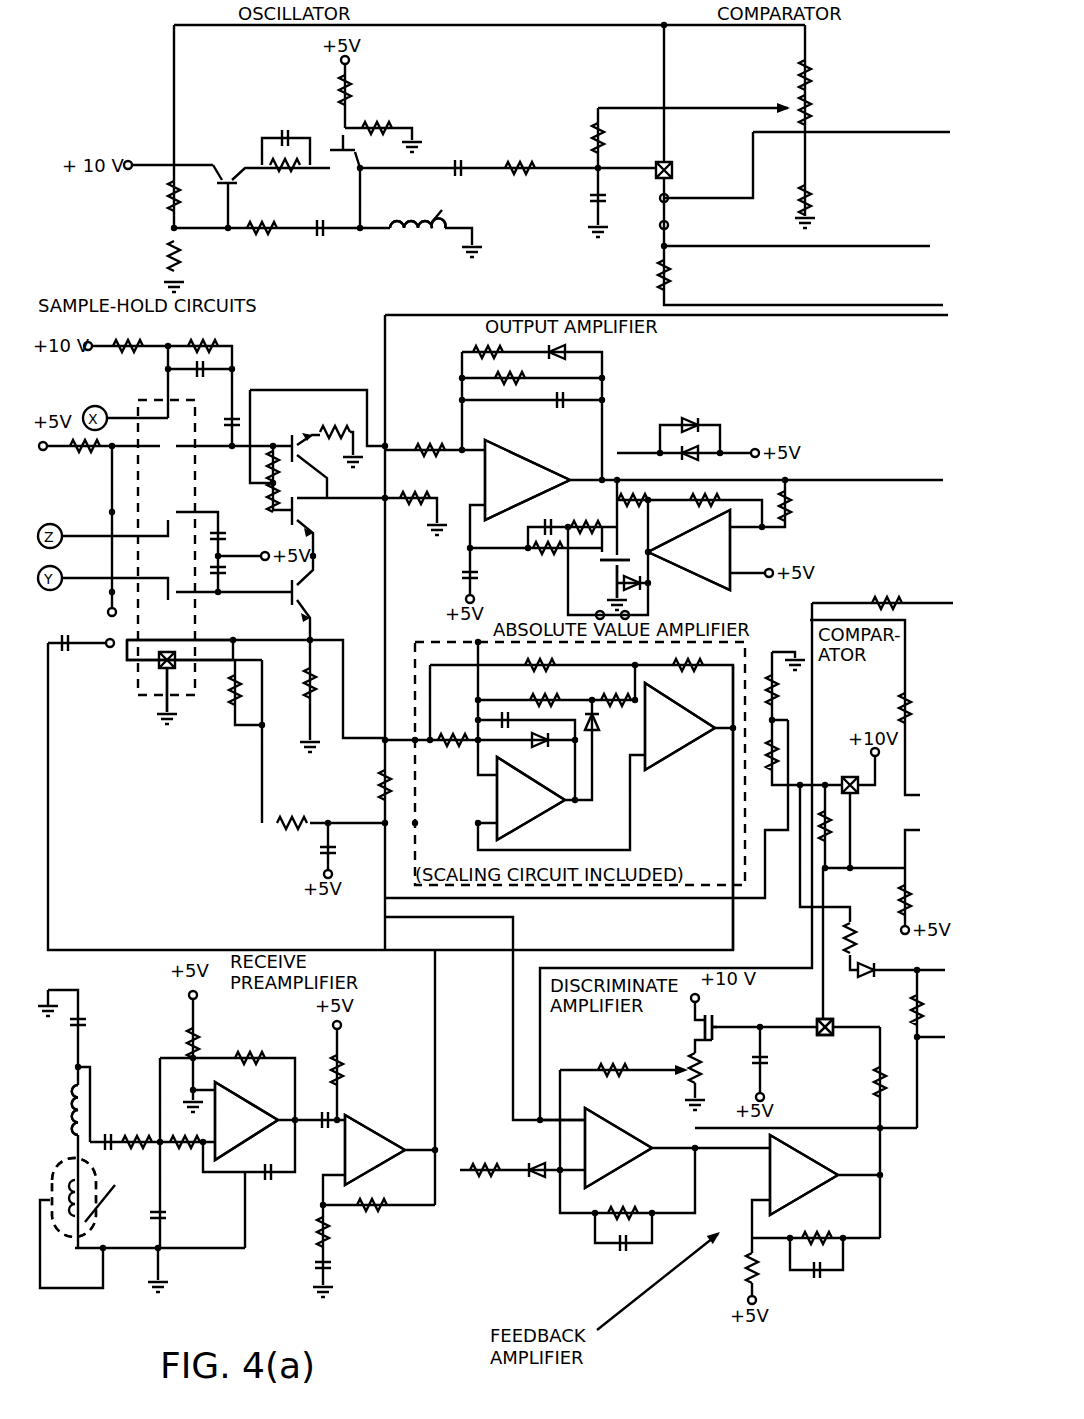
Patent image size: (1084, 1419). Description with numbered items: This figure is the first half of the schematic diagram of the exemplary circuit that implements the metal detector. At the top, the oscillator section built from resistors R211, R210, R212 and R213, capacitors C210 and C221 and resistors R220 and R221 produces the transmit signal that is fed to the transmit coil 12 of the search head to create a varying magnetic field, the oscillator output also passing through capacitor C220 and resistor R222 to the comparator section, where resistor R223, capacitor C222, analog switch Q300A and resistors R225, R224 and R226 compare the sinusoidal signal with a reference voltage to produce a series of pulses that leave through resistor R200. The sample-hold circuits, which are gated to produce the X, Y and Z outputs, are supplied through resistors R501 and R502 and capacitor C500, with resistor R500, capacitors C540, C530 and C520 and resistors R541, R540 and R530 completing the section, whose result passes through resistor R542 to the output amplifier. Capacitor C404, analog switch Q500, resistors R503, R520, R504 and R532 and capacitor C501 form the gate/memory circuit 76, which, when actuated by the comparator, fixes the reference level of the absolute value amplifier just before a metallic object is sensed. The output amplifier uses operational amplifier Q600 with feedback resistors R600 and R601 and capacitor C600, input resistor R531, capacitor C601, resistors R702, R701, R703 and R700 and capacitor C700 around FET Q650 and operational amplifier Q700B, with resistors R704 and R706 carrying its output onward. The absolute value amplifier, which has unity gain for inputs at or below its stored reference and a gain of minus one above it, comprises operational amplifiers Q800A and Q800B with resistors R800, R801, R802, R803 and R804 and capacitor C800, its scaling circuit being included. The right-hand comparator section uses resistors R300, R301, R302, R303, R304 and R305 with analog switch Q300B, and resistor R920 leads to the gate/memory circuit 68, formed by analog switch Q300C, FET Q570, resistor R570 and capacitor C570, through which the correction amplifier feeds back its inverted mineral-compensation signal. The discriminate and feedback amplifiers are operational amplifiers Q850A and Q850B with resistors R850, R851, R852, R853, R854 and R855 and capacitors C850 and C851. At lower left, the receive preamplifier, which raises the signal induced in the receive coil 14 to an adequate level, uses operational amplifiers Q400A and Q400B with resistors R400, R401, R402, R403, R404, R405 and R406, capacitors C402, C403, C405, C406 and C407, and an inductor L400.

The resistor R211 is at (150, 196).
The resistor R210 is at (148, 256).
The resistor R212 is at (291, 177).
The capacitor C210 is at (279, 123).
The resistor R213 is at (265, 241).
The capacitor C221 is at (323, 243).
The resistor R220 is at (370, 88).
The resistor R221 is at (381, 117).
The capacitor C220 is at (457, 157).
The resistor R222 is at (520, 156).
The transmit coil 12 is at (429, 212).
The resistor R223 is at (572, 133).
The capacitor C222 is at (570, 198).
The analog switch Q300A is at (697, 171).
The resistor R225 is at (833, 75).
The resistor R224 is at (833, 110).
The resistor R226 is at (833, 200).
The resistor R200 is at (688, 275).
The resistor R501 is at (127, 334).
The resistor R502 is at (203, 334).
The capacitor C500 is at (205, 383).
The resistor R500 is at (79, 458).
The capacitor C540 is at (261, 421).
The resistor R541 is at (339, 420).
The resistor R540 is at (240, 466).
The resistor R530 is at (247, 497).
The capacitor C530 is at (244, 535).
The capacitor C520 is at (244, 567).
The capacitor C404 is at (63, 631).
The analog switch Q500 is at (147, 705).
The resistor R503 is at (211, 697).
The resistor R520 is at (290, 668).
The gate/memory circuit 76 is at (170, 724).
The resistor R504 is at (290, 810).
The resistor R532 is at (360, 785).
The capacitor C501 is at (301, 851).
The resistor R542 is at (428, 438).
The resistor R600 is at (461, 344).
The resistor R601 is at (523, 369).
The capacitor C600 is at (568, 412).
The operational amplifier Q600 is at (527, 480).
The resistor R531 is at (423, 487).
The resistor R702 is at (613, 494).
The capacitor C700 is at (550, 520).
The resistor R701 is at (591, 519).
The resistor R703 is at (691, 513).
The resistor R700 is at (539, 562).
The capacitor C601 is at (448, 575).
The FET Q650 is at (599, 568).
The operational amplifier Q700B is at (721, 550).
The resistor R704 is at (813, 506).
The resistor R706 is at (883, 592).
The resistor R801 is at (570, 655).
The resistor R802 is at (549, 689).
The resistor R803 is at (607, 689).
The resistor R804 is at (691, 676).
The capacitor C800 is at (503, 704).
The resistor R800 is at (449, 750).
The operational amplifier Q800A is at (544, 799).
The operational amplifier Q800B is at (680, 734).
The resistor R300 is at (778, 692).
The resistor R301 is at (778, 757).
The resistor R302 is at (929, 708).
The analog switch Q300B is at (878, 799).
The resistor R303 is at (861, 830).
The resistor R304 is at (874, 895).
The resistor R305 is at (876, 938).
The resistor R920 is at (890, 1010).
The gate/memory circuit 68 is at (770, 1010).
The analog switch Q300C is at (838, 1036).
The FET Q570 is at (676, 1027).
The resistor R570 is at (720, 1073).
The capacitor C570 is at (787, 1061).
The resistor R852 is at (847, 1083).
The resistor R851 is at (613, 1085).
The resistor R850 is at (491, 1157).
The operational amplifier Q850A is at (618, 1148).
The operational amplifier Q850B is at (804, 1175).
The resistor R855 is at (623, 1201).
The capacitor C851 is at (621, 1257).
The resistor R853 is at (818, 1226).
The capacitor C850 is at (818, 1282).
The resistor R854 is at (723, 1268).
The resistor R401 is at (166, 1043).
The resistor R402 is at (248, 1047).
The operational amplifier Q400A is at (252, 1115).
The resistor R403 is at (363, 1070).
The capacitor C403 is at (354, 1110).
The operational amplifier Q400B is at (385, 1156).
The resistor R400 is at (131, 1129).
The resistor R406 is at (183, 1166).
The capacitor C406 is at (186, 1215).
The capacitor C407 is at (273, 1186).
The resistor R404 is at (384, 1219).
The resistor R405 is at (296, 1232).
The capacitor C405 is at (352, 1265).
The capacitor C402 is at (55, 1036).
The inductor L400 is at (51, 1101).
The receive coil 14 is at (85, 1222).